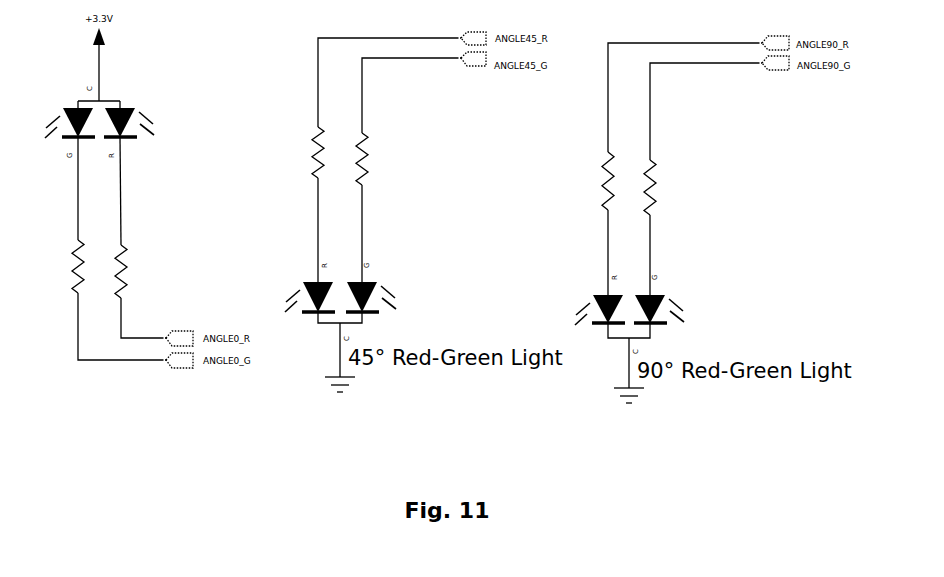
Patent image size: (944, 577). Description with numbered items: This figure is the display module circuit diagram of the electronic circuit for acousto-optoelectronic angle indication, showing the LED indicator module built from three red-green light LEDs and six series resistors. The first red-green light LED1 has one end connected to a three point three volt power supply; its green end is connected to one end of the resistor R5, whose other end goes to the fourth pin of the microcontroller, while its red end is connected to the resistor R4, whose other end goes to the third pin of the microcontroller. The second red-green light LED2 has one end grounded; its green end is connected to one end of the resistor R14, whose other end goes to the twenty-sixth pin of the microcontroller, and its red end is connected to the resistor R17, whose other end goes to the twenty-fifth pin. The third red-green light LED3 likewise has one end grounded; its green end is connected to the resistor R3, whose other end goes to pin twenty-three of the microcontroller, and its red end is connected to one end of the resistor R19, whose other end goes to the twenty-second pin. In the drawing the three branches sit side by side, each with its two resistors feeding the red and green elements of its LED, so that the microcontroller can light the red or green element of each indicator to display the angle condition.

The red-green light LED LED1 is at (101, 112).
The resistor R5 is at (64, 266).
The resistor R4 is at (132, 271).
The red-green light LED LED2 is at (361, 297).
The resistor R17 is at (303, 152).
The resistor R14 is at (377, 159).
The red-green light LED LED3 is at (650, 305).
The resistor R19 is at (592, 181).
The resistor R3 is at (667, 187).